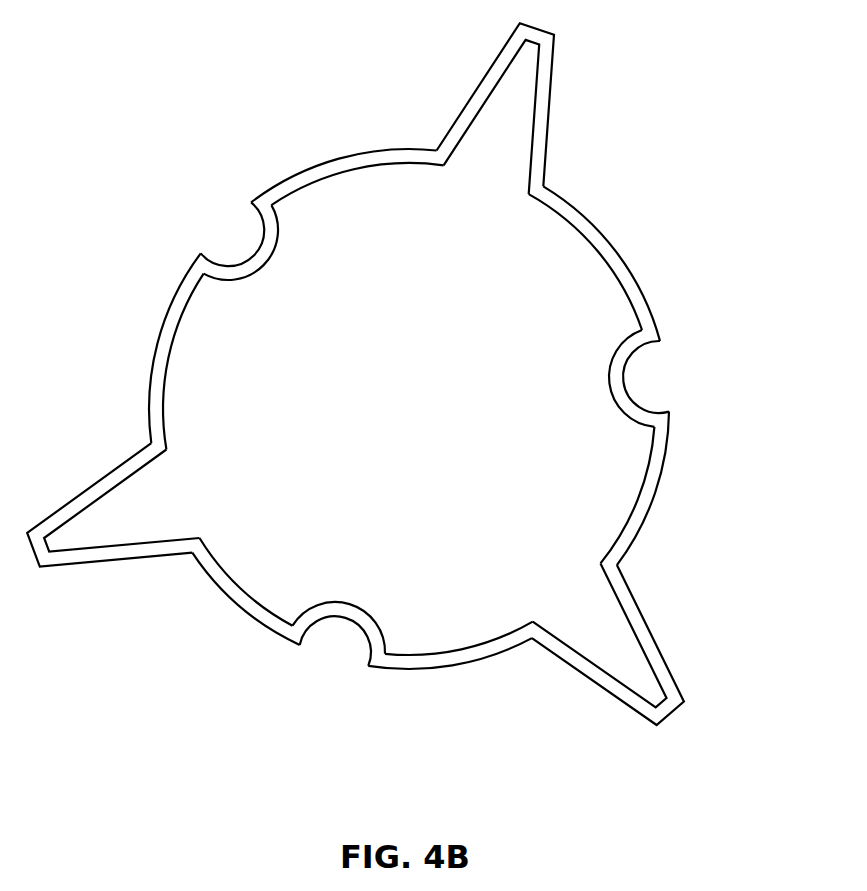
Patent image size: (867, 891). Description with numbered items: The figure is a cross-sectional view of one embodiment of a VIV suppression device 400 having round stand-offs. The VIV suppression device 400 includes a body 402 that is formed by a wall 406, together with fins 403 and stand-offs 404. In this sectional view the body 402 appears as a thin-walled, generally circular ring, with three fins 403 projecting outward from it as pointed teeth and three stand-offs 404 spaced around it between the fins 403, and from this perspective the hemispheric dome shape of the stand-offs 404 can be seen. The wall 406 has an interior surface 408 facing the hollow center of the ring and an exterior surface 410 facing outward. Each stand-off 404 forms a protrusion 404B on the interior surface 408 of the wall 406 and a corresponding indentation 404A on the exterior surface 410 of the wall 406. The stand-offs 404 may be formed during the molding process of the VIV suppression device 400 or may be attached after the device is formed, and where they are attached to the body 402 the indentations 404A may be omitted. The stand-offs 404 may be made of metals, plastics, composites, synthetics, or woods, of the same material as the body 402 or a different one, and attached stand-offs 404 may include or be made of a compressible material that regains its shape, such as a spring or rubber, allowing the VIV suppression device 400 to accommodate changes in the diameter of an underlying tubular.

The VIV suppression device 400 is at (630, 193).
The body 402 is at (287, 177).
The fins 403 is at (470, 97).
The stand-offs 404 is at (650, 365).
The indentations 404A is at (627, 385).
The protrusions 404B is at (603, 385).
The wall 406 is at (177, 310).
The interior surface 408 is at (167, 393).
The exterior surface 410 is at (147, 388).